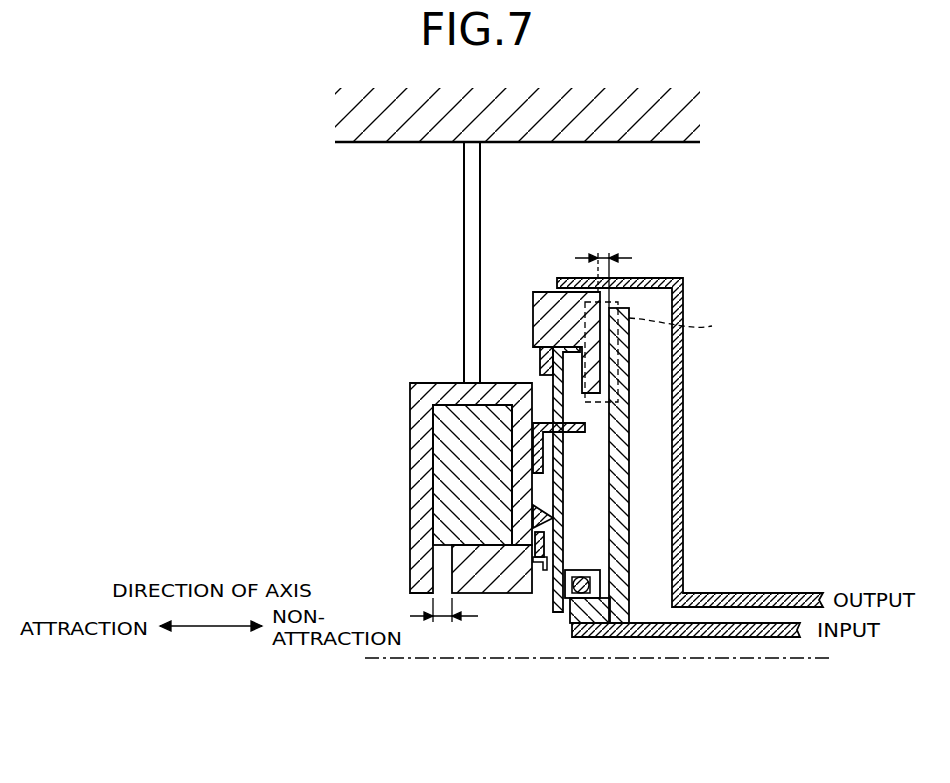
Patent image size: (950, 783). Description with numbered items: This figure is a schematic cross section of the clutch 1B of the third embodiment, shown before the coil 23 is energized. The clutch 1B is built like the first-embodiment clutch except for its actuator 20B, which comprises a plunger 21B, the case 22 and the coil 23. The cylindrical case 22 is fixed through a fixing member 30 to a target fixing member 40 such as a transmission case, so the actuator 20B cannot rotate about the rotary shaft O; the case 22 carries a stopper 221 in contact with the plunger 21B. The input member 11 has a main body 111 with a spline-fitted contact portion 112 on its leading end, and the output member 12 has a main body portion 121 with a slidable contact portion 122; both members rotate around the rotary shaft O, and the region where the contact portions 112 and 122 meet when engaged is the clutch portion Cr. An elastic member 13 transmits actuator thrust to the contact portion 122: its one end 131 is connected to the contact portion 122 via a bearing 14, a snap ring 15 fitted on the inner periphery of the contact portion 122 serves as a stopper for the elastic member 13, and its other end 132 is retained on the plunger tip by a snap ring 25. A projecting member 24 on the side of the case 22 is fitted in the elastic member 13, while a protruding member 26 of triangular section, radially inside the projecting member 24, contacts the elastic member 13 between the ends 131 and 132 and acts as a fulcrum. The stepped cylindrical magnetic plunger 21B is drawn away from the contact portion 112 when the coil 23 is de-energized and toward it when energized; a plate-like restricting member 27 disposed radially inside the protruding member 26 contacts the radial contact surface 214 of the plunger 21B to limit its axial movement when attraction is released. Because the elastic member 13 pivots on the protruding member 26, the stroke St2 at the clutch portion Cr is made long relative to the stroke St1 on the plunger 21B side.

The clutch 1B is at (807, 168).
The fixing member 30 is at (463, 188).
The target fixing member 40 is at (668, 145).
The actuator 20B is at (426, 508).
The case 22 is at (437, 382).
The coil 23 is at (433, 472).
The stopper 221 is at (436, 559).
The plunger 21B is at (488, 608).
The stroke on the plunger side St1 is at (434, 623).
The stroke on the clutch portion side St2 is at (602, 256).
The output member 12 is at (656, 418).
The main body portion 121 is at (686, 408).
The contact portion 122 is at (533, 288).
The elastic member 13 is at (635, 475).
The one end of the elastic member 131 is at (549, 346).
The other end of the elastic member 132 is at (557, 614).
The snap ring 15 is at (538, 362).
The bearing 14 is at (622, 343).
The clutch portion Cr is at (686, 321).
The input member 11 is at (682, 512).
The main body 111 is at (638, 639).
The contact portion 112 is at (631, 381).
The snap ring 25 is at (584, 594).
The projecting member 24 is at (586, 429).
The protruding member 26 is at (554, 518).
The restricting member 27 is at (545, 548).
The contact surface 214 is at (545, 572).
The rotary shaft O is at (818, 659).